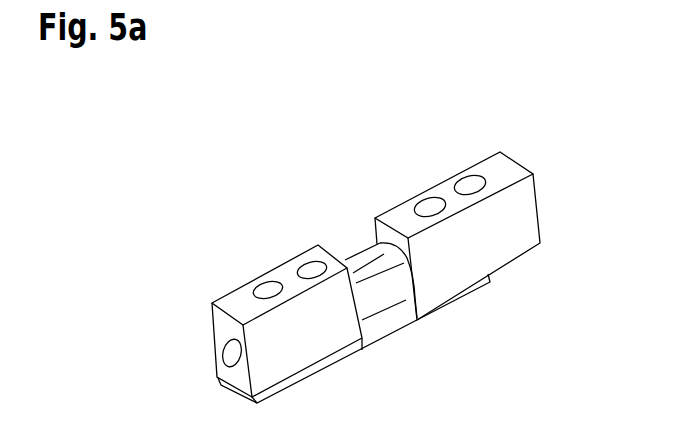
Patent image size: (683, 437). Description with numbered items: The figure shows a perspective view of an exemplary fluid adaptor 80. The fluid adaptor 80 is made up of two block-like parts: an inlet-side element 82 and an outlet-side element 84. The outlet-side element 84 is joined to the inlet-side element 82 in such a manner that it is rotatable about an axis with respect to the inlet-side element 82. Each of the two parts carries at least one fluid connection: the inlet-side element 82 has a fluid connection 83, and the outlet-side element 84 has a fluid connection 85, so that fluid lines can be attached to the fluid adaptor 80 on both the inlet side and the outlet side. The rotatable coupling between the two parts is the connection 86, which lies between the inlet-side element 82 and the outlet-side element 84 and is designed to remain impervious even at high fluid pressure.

The fluid adaptor 80 is at (561, 109).
The inlet-side element 82 is at (523, 223).
The fluid connection 83 is at (420, 187).
The outlet-side element 84 is at (225, 325).
The fluid connection 85 is at (257, 273).
The connection 86 is at (393, 340).